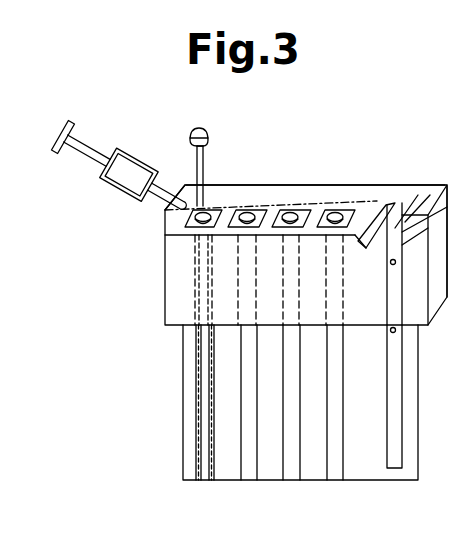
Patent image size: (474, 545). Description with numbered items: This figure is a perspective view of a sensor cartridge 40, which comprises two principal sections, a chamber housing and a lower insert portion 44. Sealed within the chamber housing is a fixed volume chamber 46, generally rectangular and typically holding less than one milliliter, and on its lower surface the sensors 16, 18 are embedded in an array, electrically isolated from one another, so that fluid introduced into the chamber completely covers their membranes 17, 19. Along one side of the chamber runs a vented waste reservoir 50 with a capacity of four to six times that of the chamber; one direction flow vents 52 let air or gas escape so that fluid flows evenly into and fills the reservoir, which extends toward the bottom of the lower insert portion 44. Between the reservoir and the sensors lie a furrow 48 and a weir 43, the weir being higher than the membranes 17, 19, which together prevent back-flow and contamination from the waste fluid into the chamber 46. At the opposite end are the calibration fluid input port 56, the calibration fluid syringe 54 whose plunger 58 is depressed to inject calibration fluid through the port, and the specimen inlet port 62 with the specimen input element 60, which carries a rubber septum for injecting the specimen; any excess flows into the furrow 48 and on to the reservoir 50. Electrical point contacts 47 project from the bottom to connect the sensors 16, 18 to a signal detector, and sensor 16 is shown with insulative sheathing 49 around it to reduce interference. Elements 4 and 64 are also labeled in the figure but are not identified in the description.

The block 4 is at (447, 228).
The sensor 16 is at (195, 274).
The membrane 17 is at (216, 211).
The sensor 18 is at (238, 296).
The membrane 19 is at (262, 211).
The cartridge 40 is at (339, 181).
The weir 43 is at (400, 245).
The lower insert portion 44 is at (368, 481).
The fixed volume chamber 46 is at (242, 190).
The electrical point contacts 47 is at (250, 482).
The furrow 48 is at (384, 211).
The insulative sheathing 49 is at (212, 482).
The vented waste reservoir 50 is at (404, 238).
The one direction flow vents 52 is at (396, 329).
The calibration fluid syringe 54 is at (137, 150).
The calibration fluid input port 56 is at (182, 208).
The plunger 58 is at (103, 143).
The specimen input element 60 is at (204, 155).
The specimen inlet port 62 is at (196, 160).
The knob 64 is at (198, 128).